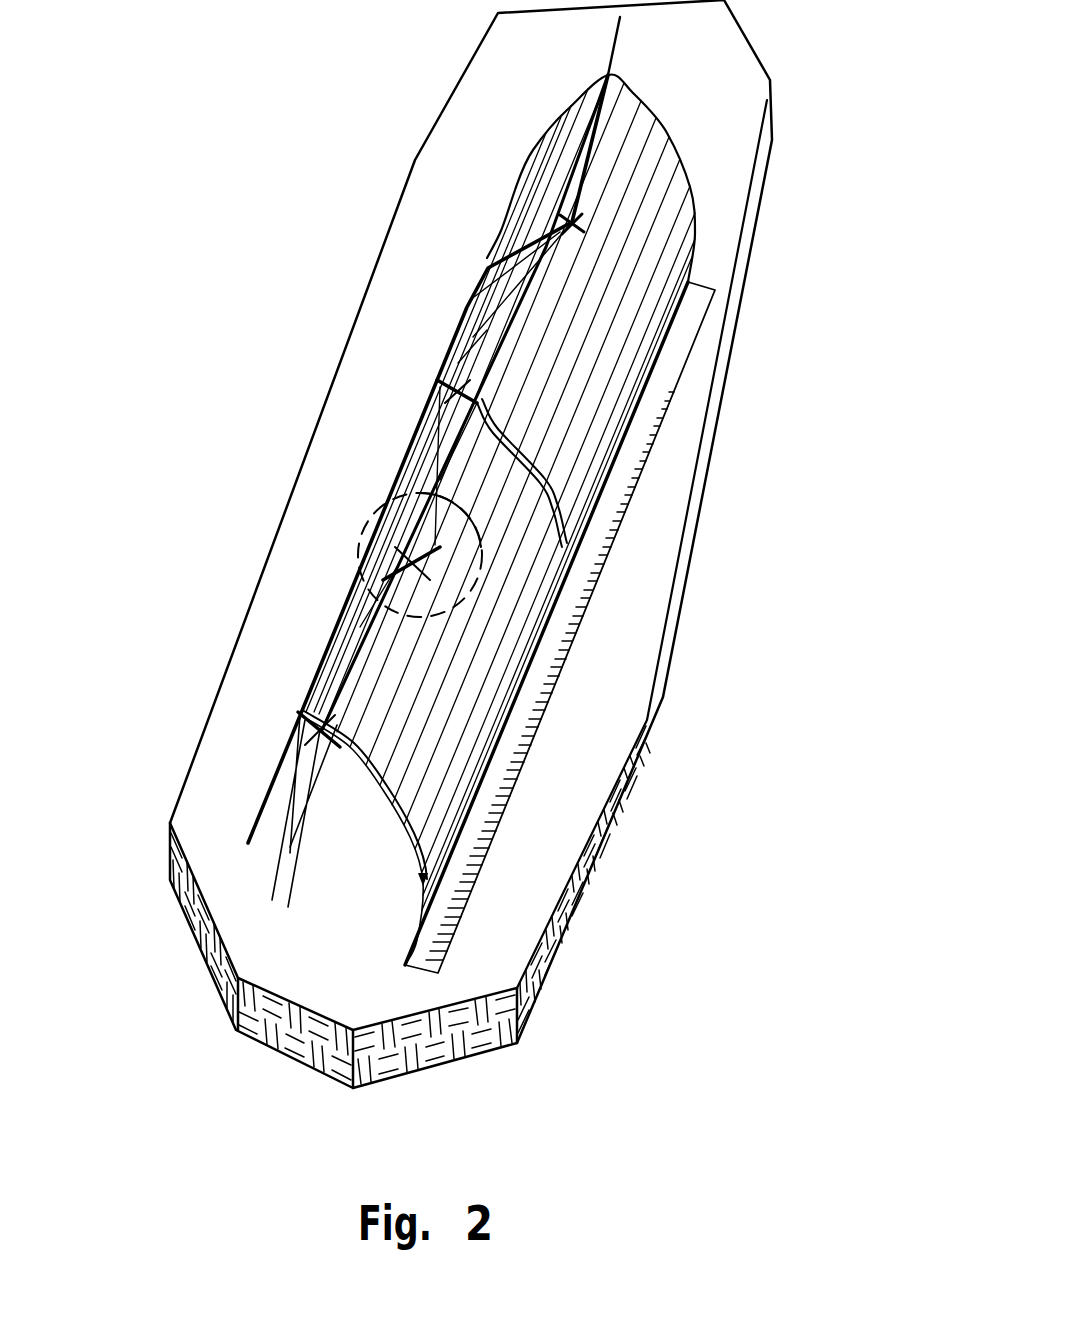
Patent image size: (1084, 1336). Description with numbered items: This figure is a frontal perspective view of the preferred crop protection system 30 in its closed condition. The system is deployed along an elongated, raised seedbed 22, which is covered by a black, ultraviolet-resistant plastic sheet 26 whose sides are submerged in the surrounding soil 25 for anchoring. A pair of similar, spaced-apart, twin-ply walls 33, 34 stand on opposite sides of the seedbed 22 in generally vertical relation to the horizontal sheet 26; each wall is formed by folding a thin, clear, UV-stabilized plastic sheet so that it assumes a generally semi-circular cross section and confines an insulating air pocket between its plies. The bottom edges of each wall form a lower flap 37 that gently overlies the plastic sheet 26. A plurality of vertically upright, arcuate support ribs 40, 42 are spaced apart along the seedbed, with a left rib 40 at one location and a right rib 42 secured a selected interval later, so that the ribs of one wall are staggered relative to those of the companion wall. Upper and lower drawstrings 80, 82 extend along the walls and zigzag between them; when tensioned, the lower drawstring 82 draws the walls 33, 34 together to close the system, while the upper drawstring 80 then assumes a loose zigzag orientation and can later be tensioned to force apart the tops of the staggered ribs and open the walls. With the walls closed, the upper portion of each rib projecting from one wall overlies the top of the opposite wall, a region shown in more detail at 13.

The system 30 is at (210, 530).
The detail region 13 is at (352, 528).
The left support rib 40 is at (490, 245).
The right support rib 42 is at (543, 477).
The twin-ply wall 33 is at (278, 758).
The plastic sheet 26 is at (213, 848).
The lower drawstring 82 is at (340, 913).
The upper drawstring 80 is at (340, 915).
The soil 25 is at (303, 1033).
The seedbed 22 is at (368, 952).
The twin-ply wall 34 is at (522, 848).
The lower flap 37 is at (445, 921).